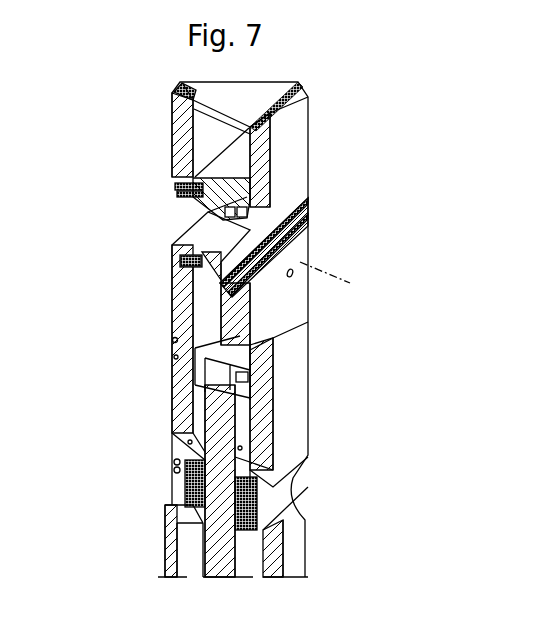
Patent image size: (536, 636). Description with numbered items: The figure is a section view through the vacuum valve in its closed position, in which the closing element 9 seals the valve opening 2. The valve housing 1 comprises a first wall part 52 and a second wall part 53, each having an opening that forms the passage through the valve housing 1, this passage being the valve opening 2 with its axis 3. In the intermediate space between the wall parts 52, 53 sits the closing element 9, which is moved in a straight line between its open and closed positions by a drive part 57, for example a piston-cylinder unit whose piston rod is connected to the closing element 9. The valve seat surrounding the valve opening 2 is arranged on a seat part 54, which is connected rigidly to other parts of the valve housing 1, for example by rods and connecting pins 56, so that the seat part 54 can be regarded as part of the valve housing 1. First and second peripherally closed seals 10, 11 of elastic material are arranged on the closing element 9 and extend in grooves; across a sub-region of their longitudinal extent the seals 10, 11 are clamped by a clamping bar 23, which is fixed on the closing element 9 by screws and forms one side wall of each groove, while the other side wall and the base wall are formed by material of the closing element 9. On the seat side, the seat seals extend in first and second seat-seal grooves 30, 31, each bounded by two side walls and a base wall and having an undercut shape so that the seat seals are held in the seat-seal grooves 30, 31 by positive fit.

The valve housing 1 is at (323, 94).
The valve opening 2 is at (193, 242).
The axis 3 is at (157, 217).
The closing element 9 is at (279, 320).
The first seal 10 is at (172, 340).
The second seal 11 is at (197, 350).
The clamping bar 23 is at (300, 233).
The first seat-seal groove 30 is at (292, 190).
The second seat-seal groove 31 is at (192, 205).
The first wall part 52 is at (263, 148).
The second wall part 53 is at (183, 128).
The seat part 54 is at (181, 262).
The connecting pins 56 is at (188, 185).
The drive part 57 is at (323, 542).